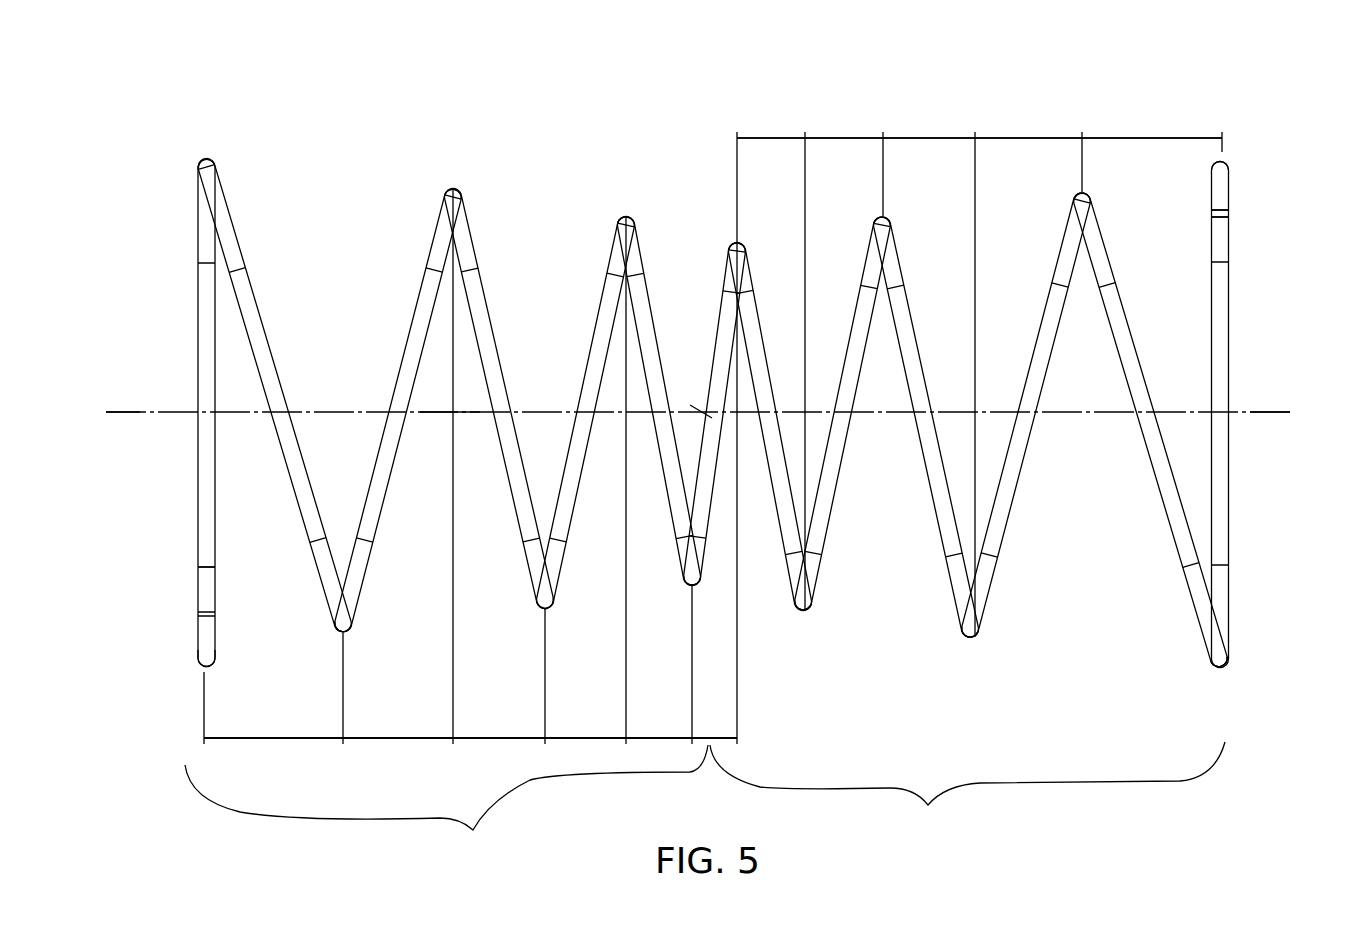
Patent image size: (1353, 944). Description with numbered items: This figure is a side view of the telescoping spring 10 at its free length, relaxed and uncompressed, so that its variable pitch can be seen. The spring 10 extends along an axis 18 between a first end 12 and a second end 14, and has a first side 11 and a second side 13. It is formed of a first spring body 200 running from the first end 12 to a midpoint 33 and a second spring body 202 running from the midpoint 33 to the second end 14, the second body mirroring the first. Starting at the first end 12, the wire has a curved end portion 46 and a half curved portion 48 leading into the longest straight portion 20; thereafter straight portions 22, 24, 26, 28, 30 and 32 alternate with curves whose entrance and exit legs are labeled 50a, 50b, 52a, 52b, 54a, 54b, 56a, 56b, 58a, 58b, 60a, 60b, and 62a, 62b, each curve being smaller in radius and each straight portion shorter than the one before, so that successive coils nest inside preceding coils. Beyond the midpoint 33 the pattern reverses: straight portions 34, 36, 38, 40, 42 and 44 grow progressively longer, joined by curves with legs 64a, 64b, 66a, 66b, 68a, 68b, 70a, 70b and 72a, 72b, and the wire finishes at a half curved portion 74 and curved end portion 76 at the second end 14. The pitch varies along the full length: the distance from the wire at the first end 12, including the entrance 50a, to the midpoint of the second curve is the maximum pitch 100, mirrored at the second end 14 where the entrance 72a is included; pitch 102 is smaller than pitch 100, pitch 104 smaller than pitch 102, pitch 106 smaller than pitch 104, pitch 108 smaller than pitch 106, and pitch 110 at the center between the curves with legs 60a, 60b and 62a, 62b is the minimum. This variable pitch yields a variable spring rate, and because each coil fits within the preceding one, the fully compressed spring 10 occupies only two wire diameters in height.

The telescoping spring 10 is at (847, 90).
The first side 11 is at (411, 130).
The first end 12 is at (136, 431).
The second side 13 is at (407, 760).
The second end 14 is at (1268, 438).
The axis 18 is at (130, 410).
The straight portion 20 is at (197, 460).
The straight portion 22 is at (262, 318).
The straight portion 24 is at (385, 502).
The straight portion 26 is at (487, 305).
The straight portion 28 is at (580, 485).
The straight portion 30 is at (655, 330).
The straight portion 32 is at (708, 494).
The midpoint 33 is at (713, 412).
The straight portion 34 is at (762, 330).
The straight portion 36 is at (832, 497).
The straight portion 38 is at (913, 325).
The straight portion 40 is at (1012, 505).
The straight portion 42 is at (1128, 320).
The straight portion 44 is at (1228, 345).
The curved end portion 46 is at (197, 655).
The half curved portion 48 is at (197, 585).
The entrance of curved portion 50 50a is at (200, 210).
The exit of curved portion 50 50b is at (230, 210).
The entrance of curved portion 52 52a is at (330, 612).
The exit of curved portion 52 52b is at (362, 612).
The entrance of curved portion 54 54a is at (437, 235).
The exit of curved portion 54 54b is at (472, 235).
The entrance of curved portion 56 56a is at (532, 587).
The exit of curved portion 56 56b is at (562, 587).
The entrance of curved portion 58 58a is at (617, 245).
The exit of curved portion 58 58b is at (640, 250).
The entrance of curved portion 60 60a is at (682, 558).
The exit of curved portion 60 60b is at (705, 560).
The entrance of curved portion 62 62a is at (727, 270).
The exit of curved portion 62 62b is at (748, 272).
The entrance of curved portion 64 64a is at (820, 588).
The exit of curved portion 64 64b is at (786, 587).
The entrance of curved portion 66 66a is at (900, 260).
The exit of curved portion 66 66b is at (870, 255).
The entrance of curved portion 68 68a is at (988, 590).
The exit of curved portion 68 68b is at (952, 587).
The entrance of curved portion 70 70a is at (1100, 250).
The exit of curved portion 70 70b is at (1060, 250).
The entrance of curved portion 72 72a is at (1226, 605).
The exit of curved portion 72 72b is at (1195, 623).
The half curved portion 74 is at (1228, 236).
The curved end portion 76 is at (1230, 186).
The maximum pitch distance 100 is at (713, 431).
The pitch 102 is at (712, 431).
The pitch 104 is at (714, 431).
The pitch 106 is at (714, 431).
The pitch 108 is at (715, 431).
The minimum pitch 110 is at (714, 730).
The first spring body 200 is at (446, 808).
The second spring body 202 is at (967, 794).